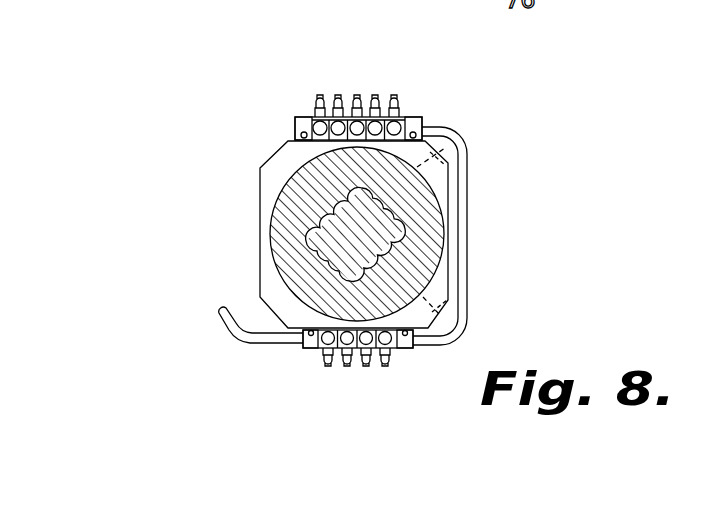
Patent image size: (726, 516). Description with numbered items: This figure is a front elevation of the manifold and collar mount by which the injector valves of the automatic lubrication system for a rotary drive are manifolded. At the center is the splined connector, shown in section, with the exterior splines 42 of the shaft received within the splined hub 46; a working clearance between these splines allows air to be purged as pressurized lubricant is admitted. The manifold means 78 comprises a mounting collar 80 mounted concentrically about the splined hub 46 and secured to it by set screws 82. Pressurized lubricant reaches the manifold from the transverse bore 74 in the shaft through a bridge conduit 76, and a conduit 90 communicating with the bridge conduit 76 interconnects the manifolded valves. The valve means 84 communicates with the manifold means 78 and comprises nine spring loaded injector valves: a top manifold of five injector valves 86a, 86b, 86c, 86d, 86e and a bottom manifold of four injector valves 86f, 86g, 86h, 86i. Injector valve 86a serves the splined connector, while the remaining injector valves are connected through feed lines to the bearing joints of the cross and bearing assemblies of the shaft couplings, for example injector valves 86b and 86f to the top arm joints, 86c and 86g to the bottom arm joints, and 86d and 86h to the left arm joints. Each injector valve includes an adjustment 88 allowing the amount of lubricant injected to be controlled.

The exterior splines 42 is at (310, 242).
The splined hub 46 is at (273, 205).
The transverse bore 74 is at (580, 22).
The bridge conduit 76 is at (252, 333).
The manifold means 78 is at (243, 157).
The mounting collar 80 is at (273, 152).
The set screws 82 is at (460, 176).
The valve means 84 is at (369, 86).
The injector valve 86a is at (318, 96).
The injector valve 86b is at (339, 96).
The injector valve 86c is at (357, 96).
The injector valve 86d is at (380, 96).
The injector valve 86e is at (396, 98).
The injector valve 86f is at (325, 364).
The injector valve 86g is at (345, 367).
The injector valve 86h is at (366, 367).
The injector valve 86i is at (386, 367).
The adjustment 88 is at (413, 117).
The conduit 90 is at (468, 230).